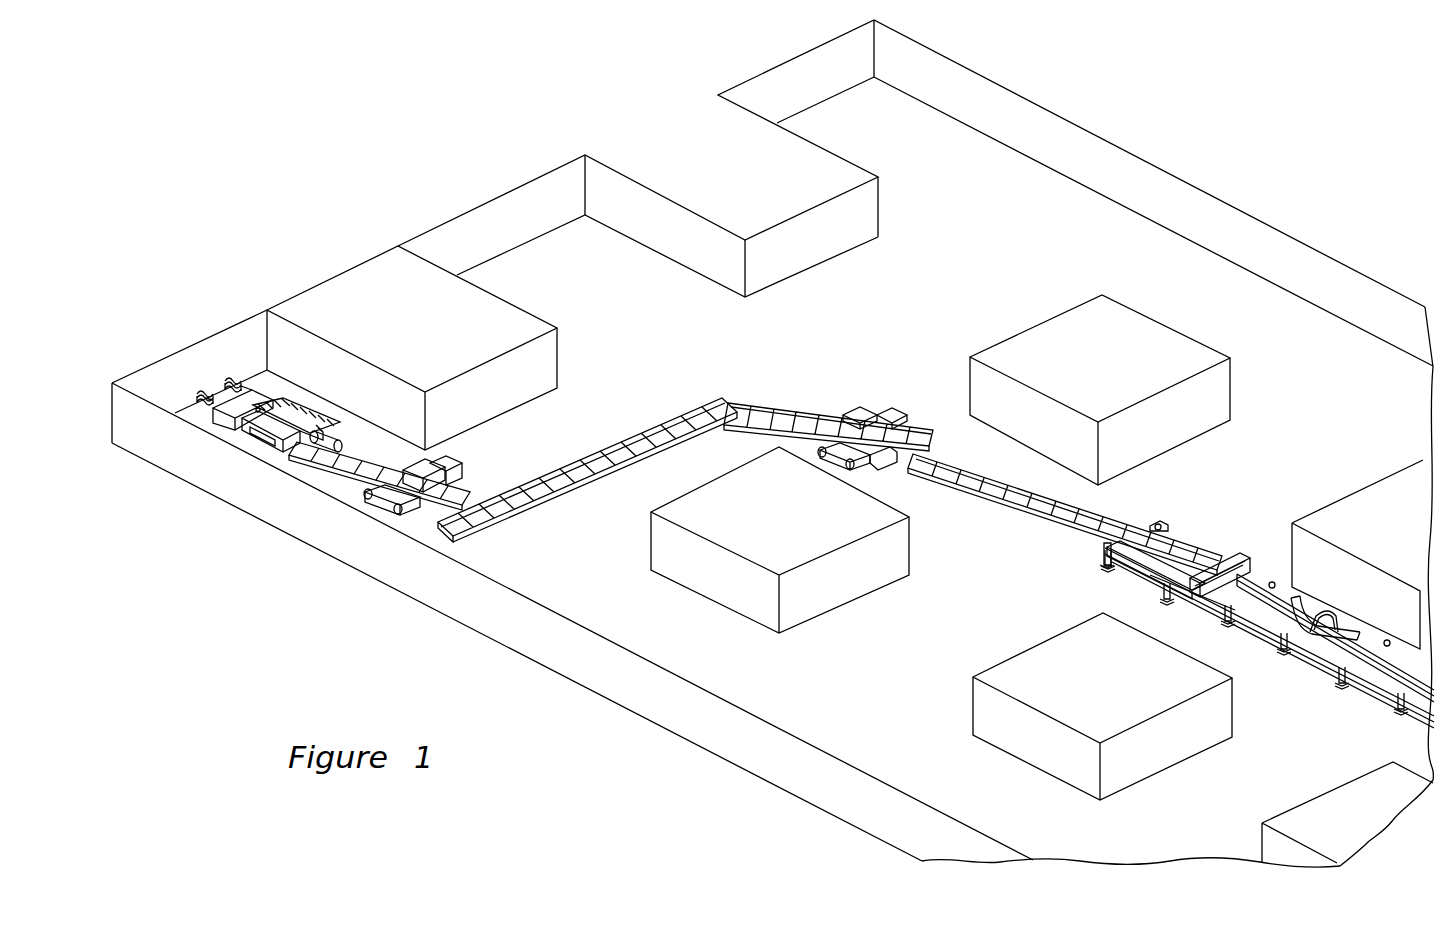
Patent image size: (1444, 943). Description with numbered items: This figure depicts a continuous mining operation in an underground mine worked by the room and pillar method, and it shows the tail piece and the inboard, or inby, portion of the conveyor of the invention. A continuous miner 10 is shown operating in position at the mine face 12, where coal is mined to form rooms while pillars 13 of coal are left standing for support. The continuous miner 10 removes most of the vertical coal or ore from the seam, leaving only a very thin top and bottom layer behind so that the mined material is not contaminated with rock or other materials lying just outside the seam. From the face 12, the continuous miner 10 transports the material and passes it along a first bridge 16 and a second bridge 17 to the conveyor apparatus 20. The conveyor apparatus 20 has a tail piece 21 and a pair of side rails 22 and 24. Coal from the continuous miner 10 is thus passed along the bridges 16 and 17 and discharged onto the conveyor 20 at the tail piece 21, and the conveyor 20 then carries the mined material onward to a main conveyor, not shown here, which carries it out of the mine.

The continuous miner 10 is at (255, 390).
The mine face 12 is at (223, 335).
The pillars 13 is at (648, 535).
The bridge 16 is at (838, 420).
The bridge 17 is at (665, 425).
The conveyor apparatus 20 is at (1365, 708).
The tail piece 21 is at (1110, 588).
The side rail 22 is at (1312, 667).
The side rail 24 is at (1325, 630).